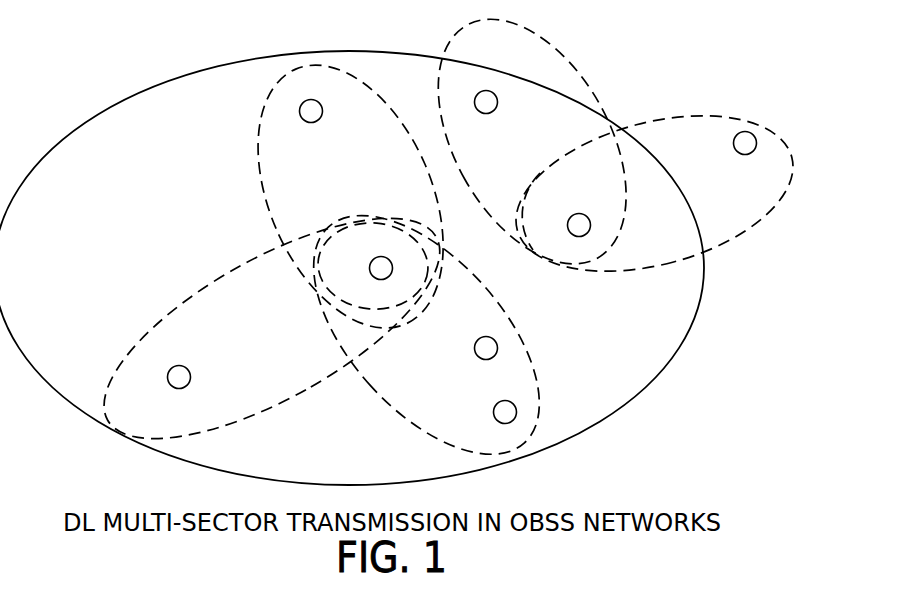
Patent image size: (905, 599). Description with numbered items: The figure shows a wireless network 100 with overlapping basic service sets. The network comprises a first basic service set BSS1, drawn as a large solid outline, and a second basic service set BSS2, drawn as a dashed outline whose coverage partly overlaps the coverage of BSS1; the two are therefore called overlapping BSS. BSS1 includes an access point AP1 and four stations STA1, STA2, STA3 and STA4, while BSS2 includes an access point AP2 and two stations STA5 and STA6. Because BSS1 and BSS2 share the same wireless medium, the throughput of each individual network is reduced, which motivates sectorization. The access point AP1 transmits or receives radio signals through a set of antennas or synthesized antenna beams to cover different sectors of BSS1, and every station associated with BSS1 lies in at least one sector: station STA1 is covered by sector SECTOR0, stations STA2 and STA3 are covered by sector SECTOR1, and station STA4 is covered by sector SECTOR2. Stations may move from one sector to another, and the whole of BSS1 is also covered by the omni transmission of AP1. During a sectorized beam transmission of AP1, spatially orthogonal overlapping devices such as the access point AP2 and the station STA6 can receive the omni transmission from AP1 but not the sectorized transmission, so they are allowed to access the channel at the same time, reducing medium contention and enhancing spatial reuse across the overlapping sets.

The wireless network 100 is at (104, 26).
The first basic service set BSS1 is at (132, 248).
The second basic service set BSS2 is at (600, 170).
The access point AP1 is at (372, 265).
The access point AP2 is at (573, 213).
The station STA1 is at (157, 391).
The station STA2 is at (463, 341).
The station STA3 is at (475, 411).
The station STA4 is at (324, 128).
The station STA5 is at (757, 158).
The station STA6 is at (508, 104).
The sector 0 SECTOR0 is at (297, 355).
The sector 1 SECTOR1 is at (467, 376).
The sector 2 SECTOR2 is at (388, 185).